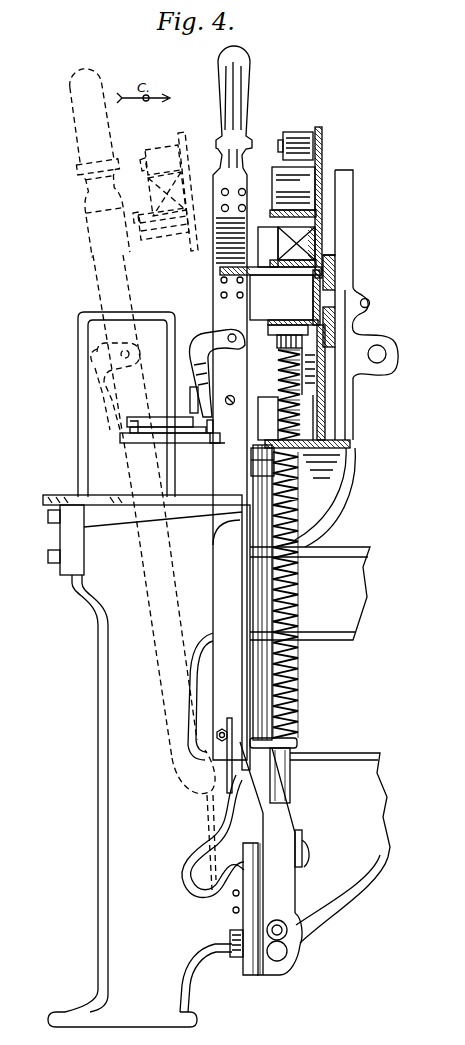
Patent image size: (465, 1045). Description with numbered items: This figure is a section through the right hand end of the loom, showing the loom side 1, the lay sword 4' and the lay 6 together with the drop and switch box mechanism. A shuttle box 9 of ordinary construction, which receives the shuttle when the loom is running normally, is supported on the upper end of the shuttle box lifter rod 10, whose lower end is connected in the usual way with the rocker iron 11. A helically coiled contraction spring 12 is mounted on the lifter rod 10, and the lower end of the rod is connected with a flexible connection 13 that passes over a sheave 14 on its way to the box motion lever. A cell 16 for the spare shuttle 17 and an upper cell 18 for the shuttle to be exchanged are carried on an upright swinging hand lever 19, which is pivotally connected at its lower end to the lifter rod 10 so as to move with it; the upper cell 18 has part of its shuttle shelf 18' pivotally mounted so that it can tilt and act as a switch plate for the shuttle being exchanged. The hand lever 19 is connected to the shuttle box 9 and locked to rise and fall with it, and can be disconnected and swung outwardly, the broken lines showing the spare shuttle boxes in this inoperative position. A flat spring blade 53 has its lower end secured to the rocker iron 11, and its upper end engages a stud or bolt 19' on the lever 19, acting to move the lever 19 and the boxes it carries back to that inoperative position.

The loom side 1 is at (90, 432).
The lay sword 4' is at (332, 497).
The lay 6 is at (313, 367).
The shuttle box 9 is at (300, 298).
The shuttle box lifter rod 10 is at (293, 680).
The rocker iron 11 is at (303, 837).
The helically coiled contraction spring 12 is at (293, 600).
The flexible connection 13 is at (262, 530).
The sheave 14 is at (262, 458).
The cell for the spare shuttle 16 is at (262, 250).
The spare shuttle 17 is at (303, 253).
The cell for the shuttle to be exchanged 18 is at (326, 186).
The shuttle shelf 18' is at (325, 202).
The upright swinging hand lever 19 is at (222, 403).
The stud or bolt 19' is at (185, 756).
The flat spring blade 53 is at (222, 808).